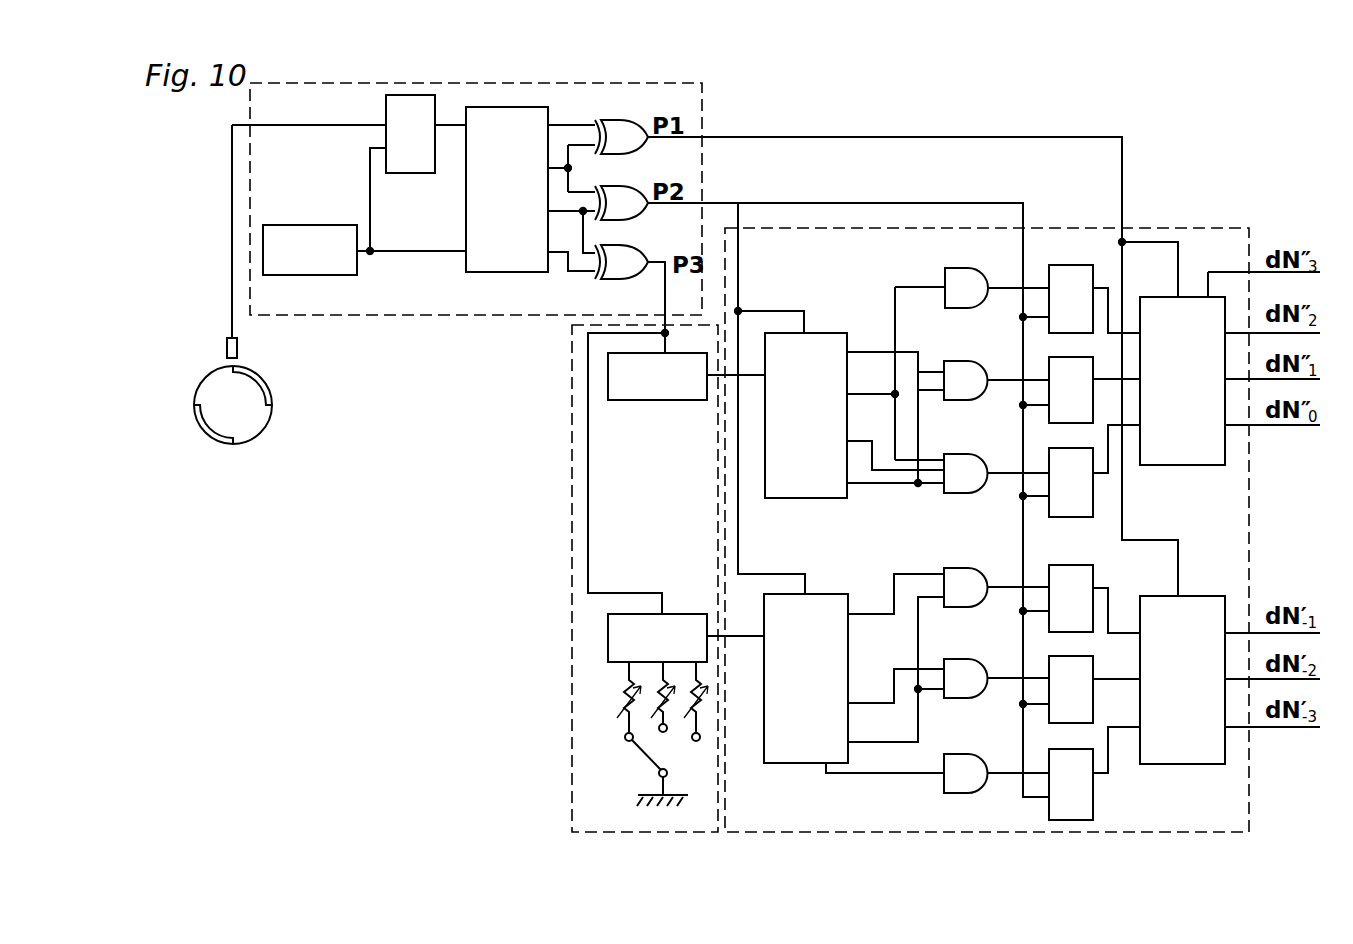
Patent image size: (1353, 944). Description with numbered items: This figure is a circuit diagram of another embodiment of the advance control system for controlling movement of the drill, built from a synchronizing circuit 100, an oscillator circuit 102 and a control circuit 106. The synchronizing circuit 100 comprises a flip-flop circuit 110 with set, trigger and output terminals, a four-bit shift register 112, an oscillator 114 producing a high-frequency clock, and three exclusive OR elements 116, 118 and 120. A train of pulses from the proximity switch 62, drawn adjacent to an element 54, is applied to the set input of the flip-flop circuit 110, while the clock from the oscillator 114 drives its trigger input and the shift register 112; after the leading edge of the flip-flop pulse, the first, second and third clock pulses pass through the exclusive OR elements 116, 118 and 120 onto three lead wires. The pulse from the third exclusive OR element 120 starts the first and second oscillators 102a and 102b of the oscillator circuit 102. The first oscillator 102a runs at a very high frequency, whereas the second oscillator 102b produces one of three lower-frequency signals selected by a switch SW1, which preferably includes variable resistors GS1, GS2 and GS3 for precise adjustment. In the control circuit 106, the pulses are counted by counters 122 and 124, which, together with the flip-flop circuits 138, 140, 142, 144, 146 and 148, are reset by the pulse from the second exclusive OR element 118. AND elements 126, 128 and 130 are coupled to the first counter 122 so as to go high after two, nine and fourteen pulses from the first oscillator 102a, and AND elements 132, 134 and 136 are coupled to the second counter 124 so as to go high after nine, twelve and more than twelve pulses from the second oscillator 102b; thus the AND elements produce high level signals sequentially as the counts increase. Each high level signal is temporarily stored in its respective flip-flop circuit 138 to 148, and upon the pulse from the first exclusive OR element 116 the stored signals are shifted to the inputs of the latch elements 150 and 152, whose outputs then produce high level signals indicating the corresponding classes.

The slotted rotating disk 54 is at (237, 412).
The proximity switch 62 is at (227, 346).
The synchronizing circuit 100 is at (495, 318).
The oscillator circuit 102 is at (572, 450).
The first oscillator 102a is at (673, 400).
The second oscillator 102b is at (683, 612).
The control circuit 106 is at (1208, 227).
The flip-flop circuit 110 is at (386, 115).
The 4-bit shift register 112 is at (466, 268).
The oscillator 114 is at (315, 225).
The first exclusive OR element 116 is at (634, 132).
The second exclusive OR element 118 is at (634, 198).
The third exclusive OR element 120 is at (622, 278).
The first counter 122 is at (828, 333).
The second counter 124 is at (820, 594).
The AND element 126 is at (962, 282).
The AND element 128 is at (962, 372).
The AND element 130 is at (957, 483).
The AND element 132 is at (968, 578).
The AND element 134 is at (975, 698).
The AND element 136 is at (975, 792).
The flip-flop circuit 138 is at (1072, 276).
The flip-flop circuit 140 is at (1049, 358).
The flip-flop circuit 142 is at (1049, 450).
The flip-flop circuit 144 is at (1072, 574).
The flip-flop circuit 146 is at (1049, 656).
The flip-flop circuit 148 is at (1093, 805).
The latch element 150 is at (1205, 297).
The latch element 152 is at (1205, 596).
The variable resistor GS1 is at (625, 710).
The variable resistor GS2 is at (660, 718).
The variable resistor GS3 is at (697, 730).
The switch SW1 is at (640, 748).